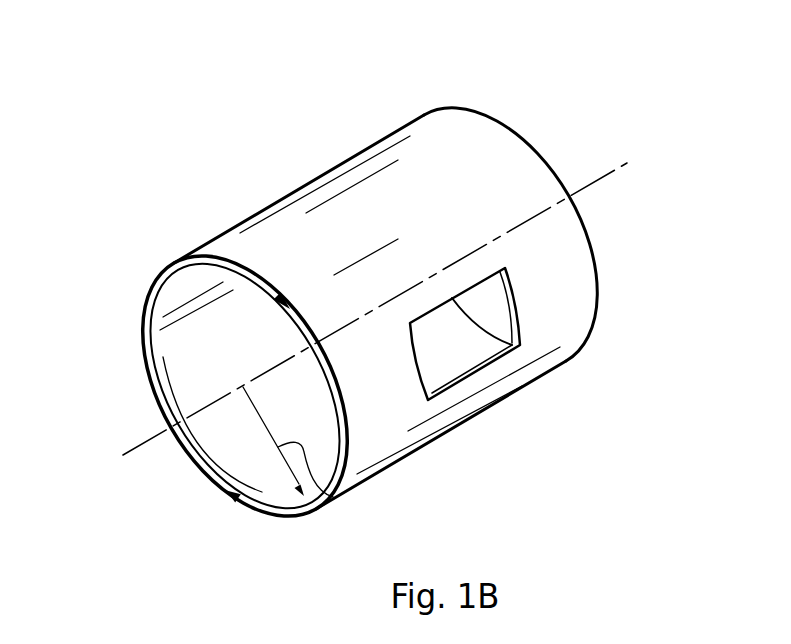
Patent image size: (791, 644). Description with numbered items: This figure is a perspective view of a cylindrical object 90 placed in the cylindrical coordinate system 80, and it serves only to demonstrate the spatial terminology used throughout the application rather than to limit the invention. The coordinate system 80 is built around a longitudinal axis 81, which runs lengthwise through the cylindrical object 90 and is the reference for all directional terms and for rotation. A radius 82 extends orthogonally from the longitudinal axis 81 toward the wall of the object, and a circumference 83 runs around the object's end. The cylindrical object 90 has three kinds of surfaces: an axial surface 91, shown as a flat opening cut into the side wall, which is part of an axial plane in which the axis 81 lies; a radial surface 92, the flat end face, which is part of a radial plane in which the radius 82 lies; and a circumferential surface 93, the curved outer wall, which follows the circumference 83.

The cylindrical coordinate system 80 is at (538, 114).
The longitudinal axis 81 is at (135, 450).
The radius 82 is at (333, 497).
The circumference 83 is at (151, 288).
The cylindrical object 90 is at (401, 103).
The axial surface 91 is at (494, 352).
The radial surface 92 is at (258, 503).
The circumferential surface 93 is at (350, 208).